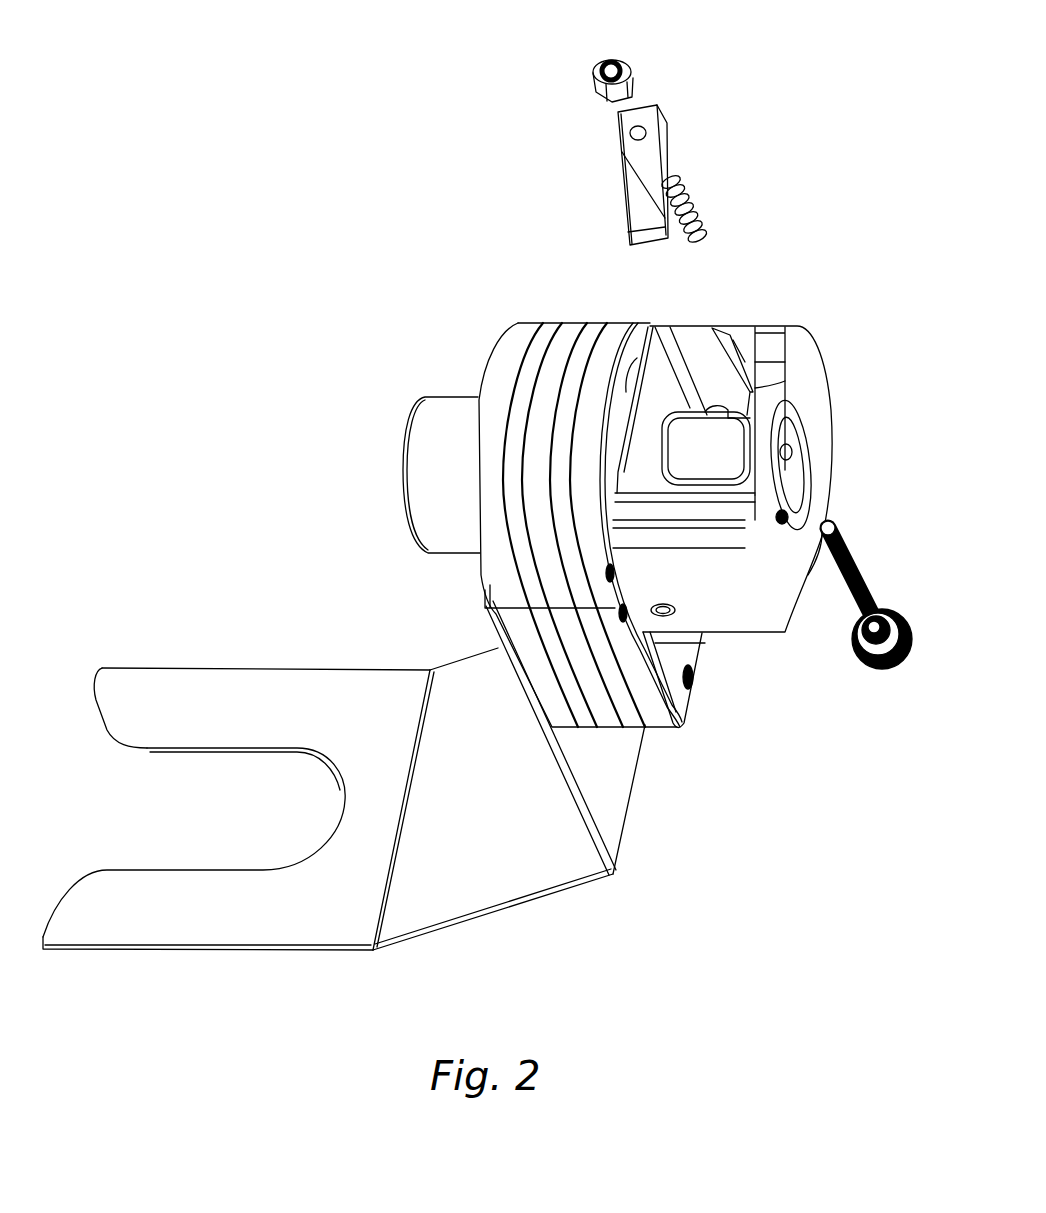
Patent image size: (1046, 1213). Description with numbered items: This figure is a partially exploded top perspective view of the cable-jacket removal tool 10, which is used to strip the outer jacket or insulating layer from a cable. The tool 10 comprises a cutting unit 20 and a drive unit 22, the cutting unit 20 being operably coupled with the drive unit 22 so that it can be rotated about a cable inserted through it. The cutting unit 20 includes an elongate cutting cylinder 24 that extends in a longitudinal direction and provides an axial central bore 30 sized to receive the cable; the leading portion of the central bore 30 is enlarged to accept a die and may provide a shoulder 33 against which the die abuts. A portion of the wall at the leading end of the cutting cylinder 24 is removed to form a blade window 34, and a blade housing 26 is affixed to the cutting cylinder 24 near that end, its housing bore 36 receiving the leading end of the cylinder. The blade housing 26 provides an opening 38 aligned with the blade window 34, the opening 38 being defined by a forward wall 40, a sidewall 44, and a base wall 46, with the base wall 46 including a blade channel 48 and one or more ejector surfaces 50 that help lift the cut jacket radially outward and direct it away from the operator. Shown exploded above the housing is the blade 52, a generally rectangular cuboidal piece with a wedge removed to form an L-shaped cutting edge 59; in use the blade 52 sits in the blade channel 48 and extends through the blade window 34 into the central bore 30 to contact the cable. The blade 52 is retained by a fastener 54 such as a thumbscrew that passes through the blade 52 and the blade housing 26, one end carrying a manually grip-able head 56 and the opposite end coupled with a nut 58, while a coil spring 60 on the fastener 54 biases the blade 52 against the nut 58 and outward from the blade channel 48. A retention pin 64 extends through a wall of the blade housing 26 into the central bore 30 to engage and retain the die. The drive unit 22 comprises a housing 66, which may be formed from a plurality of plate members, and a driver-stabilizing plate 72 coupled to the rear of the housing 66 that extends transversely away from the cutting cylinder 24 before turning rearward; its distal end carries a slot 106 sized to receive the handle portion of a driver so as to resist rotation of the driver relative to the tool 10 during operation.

The cable-jacket removal tool 10 is at (260, 311).
The cutting unit 20 is at (799, 316).
The drive unit 22 is at (533, 316).
The cutting cylinder 24 is at (432, 554).
The blade housing 26 is at (763, 636).
The central bore 30 is at (687, 472).
The shoulder 33 is at (703, 454).
The blade window 34 is at (707, 413).
The housing bore 36 is at (803, 405).
The opening 38 is at (758, 368).
The forward wall 40 is at (754, 395).
The sidewall 44 is at (698, 490).
The base wall 46 is at (648, 483).
The blade channel 48 is at (738, 340).
The ejector surfaces 50 is at (657, 380).
The blade 52 is at (658, 103).
The fastener 54 is at (860, 580).
The head 56 is at (908, 640).
The nut 58 is at (617, 55).
The cutting edge 59 is at (640, 243).
The coil spring 60 is at (688, 200).
The retention pin 64 is at (827, 543).
The housing 66 is at (590, 325).
The driver-stabilizing plate 72 is at (225, 950).
The slot 106 is at (256, 748).